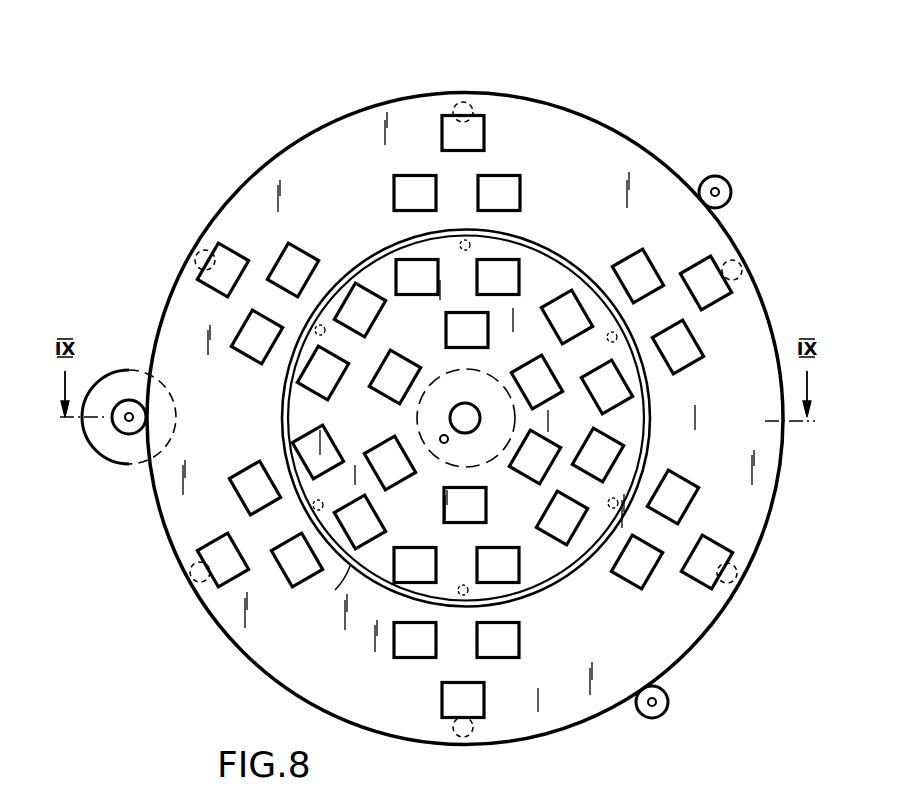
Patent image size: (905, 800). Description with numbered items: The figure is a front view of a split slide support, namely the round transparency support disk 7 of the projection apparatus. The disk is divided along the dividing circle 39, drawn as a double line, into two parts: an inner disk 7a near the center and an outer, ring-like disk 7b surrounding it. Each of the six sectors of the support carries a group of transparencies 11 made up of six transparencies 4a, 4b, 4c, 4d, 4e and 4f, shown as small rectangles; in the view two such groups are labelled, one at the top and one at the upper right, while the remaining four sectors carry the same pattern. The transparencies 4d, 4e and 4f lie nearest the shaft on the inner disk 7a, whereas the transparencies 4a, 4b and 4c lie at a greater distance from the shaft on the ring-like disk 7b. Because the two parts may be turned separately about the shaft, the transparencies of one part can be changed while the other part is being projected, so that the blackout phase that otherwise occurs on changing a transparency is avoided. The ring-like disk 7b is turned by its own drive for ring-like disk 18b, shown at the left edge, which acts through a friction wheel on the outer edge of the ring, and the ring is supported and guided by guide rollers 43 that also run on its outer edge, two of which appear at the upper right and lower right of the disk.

The transparency support disk 7 is at (476, 382).
The inner disk 7a is at (466, 397).
The ring-like disk 7b is at (449, 417).
The group of transparencies 11 is at (504, 84).
The dividing circle 39 is at (335, 590).
The guide roller 43 is at (728, 186).
The drive for ring-like disk 18b is at (118, 380).
The transparency 4a is at (464, 417).
The transparency 4b is at (464, 417).
The transparency 4c is at (466, 417).
The transparency 4d is at (460, 421).
The transparency 4e is at (462, 421).
The transparency 4f is at (463, 418).